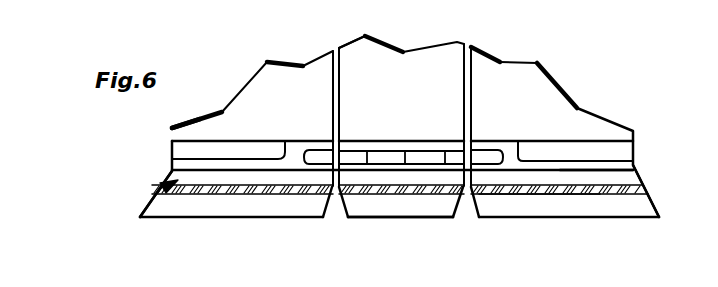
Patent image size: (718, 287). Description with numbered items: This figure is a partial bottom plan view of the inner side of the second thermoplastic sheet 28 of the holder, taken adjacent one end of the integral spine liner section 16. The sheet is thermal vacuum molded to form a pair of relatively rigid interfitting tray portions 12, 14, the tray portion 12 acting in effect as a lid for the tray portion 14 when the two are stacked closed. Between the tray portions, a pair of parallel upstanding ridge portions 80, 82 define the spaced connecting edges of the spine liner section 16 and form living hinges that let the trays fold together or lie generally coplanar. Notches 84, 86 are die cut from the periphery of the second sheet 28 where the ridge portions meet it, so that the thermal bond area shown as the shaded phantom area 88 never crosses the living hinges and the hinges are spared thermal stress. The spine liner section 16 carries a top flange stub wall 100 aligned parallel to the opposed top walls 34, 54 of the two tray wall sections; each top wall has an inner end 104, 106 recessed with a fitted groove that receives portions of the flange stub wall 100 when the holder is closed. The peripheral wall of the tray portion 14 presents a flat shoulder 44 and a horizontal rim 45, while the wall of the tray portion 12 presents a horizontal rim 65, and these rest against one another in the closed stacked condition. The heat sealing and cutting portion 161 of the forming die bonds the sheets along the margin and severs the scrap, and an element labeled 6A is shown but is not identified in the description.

The tray portion 12 is at (592, 115).
The tray portion 14 is at (168, 128).
The spine liner section 16 is at (414, 87).
The second thermoplastic sheet 28 is at (250, 222).
The top wall 34 is at (166, 186).
The flat shoulder 44 is at (172, 146).
The horizontal rim 45 is at (172, 170).
The top wall 54 is at (628, 188).
The horizontal rim 65 is at (625, 152).
The wall portion 6A is at (634, 168).
The ridge portion 80 is at (464, 68).
The ridge portion 82 is at (340, 66).
The notch 84 is at (466, 206).
The notch 86 is at (336, 206).
The shaded phantom area 88 is at (541, 197).
The top flange stub wall 100 is at (415, 144).
The inner end 104 is at (327, 136).
The inner end 106 is at (481, 134).
The heat sealing and cutting portion 161 is at (158, 205).